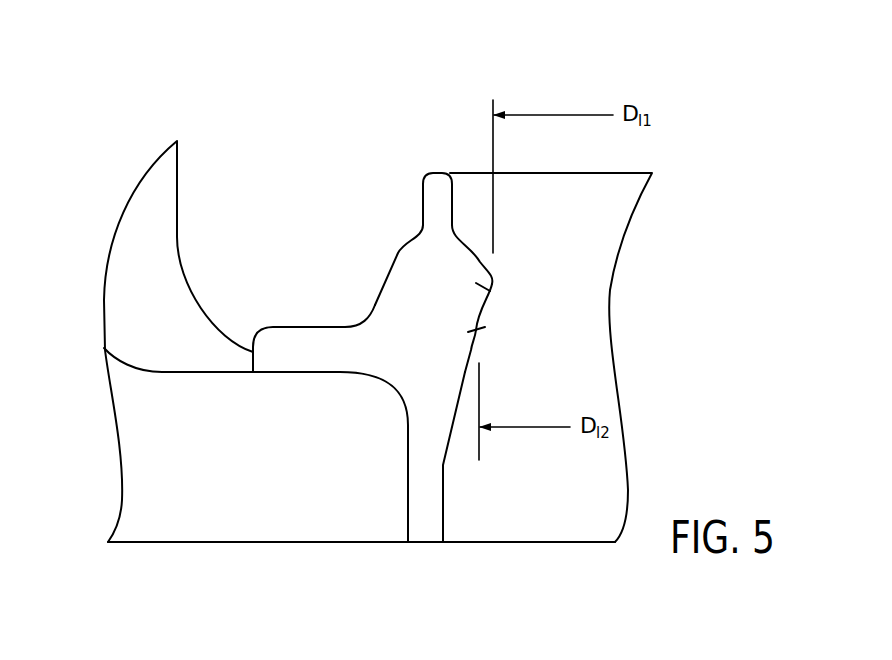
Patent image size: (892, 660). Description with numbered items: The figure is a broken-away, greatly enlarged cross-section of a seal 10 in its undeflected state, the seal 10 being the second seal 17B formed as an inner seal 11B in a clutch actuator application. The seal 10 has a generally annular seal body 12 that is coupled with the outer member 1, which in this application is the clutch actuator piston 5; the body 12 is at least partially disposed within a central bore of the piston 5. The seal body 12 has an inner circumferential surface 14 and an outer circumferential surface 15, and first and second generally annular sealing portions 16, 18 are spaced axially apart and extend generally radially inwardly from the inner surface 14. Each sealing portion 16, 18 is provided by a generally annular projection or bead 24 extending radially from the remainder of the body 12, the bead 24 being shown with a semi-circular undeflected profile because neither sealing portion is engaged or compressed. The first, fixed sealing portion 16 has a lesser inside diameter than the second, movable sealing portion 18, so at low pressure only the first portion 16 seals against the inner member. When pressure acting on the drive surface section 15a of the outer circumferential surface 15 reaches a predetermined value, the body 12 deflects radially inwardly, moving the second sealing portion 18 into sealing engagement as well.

The seal 10 is at (580, 77).
The outer member 1 is at (196, 510).
The clutch actuator piston 5 is at (338, 527).
The outer circumferential surface 15 is at (407, 440).
The seal body 12 is at (404, 306).
The drive surface section 15a is at (387, 268).
The inner seal 11B is at (379, 183).
The second seal 17B is at (445, 171).
The first sealing portion 16 is at (497, 282).
The projection or bead 24 is at (480, 288).
The second sealing portion 18 is at (489, 339).
The inner circumferential surface 14 is at (443, 493).